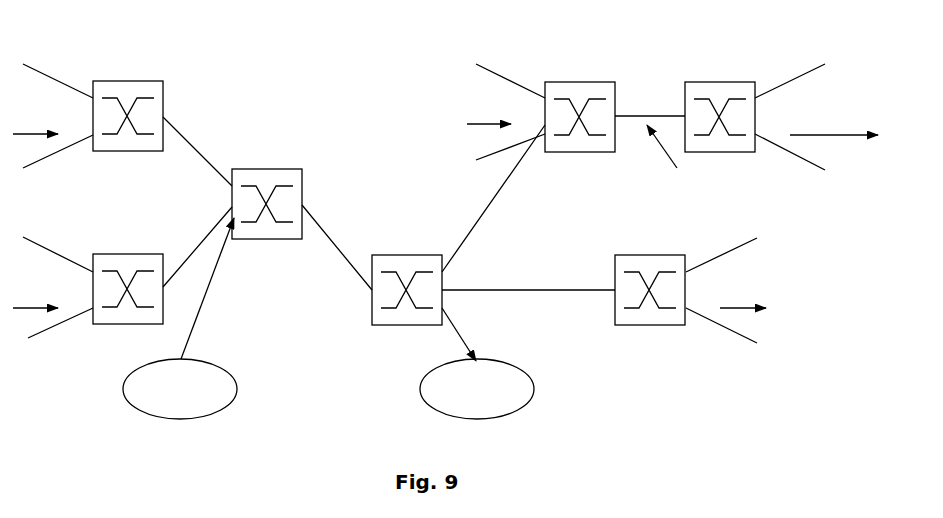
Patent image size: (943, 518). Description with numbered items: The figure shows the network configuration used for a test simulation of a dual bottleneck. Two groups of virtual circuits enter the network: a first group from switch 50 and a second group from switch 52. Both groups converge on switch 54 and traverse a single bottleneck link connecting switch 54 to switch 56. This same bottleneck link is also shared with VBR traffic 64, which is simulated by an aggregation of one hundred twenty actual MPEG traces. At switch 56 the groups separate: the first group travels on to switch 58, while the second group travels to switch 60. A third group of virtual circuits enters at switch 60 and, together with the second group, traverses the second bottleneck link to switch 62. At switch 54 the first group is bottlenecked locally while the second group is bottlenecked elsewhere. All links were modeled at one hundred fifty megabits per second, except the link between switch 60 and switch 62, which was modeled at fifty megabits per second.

The switch 50 is at (163, 89).
The switch 52 is at (125, 254).
The switch 54 is at (302, 184).
The switch 56 is at (372, 316).
The switch 58 is at (615, 272).
The switch 60 is at (582, 82).
The switch 62 is at (723, 82).
The VBR traffic 64 is at (167, 413).